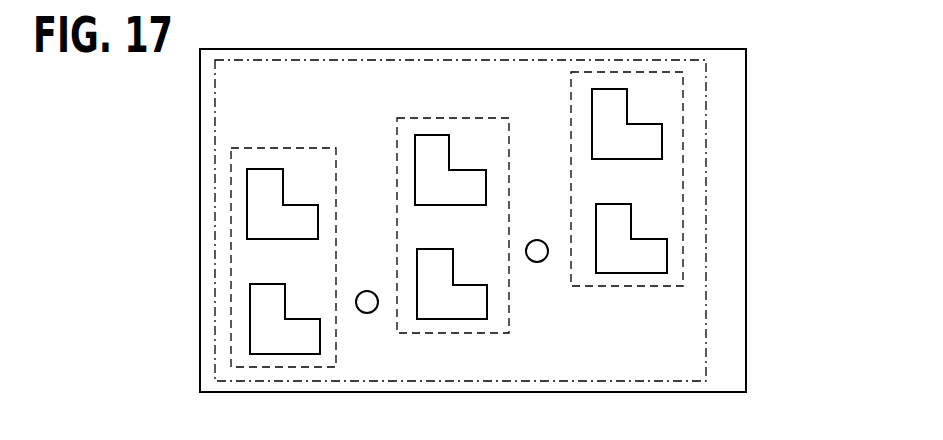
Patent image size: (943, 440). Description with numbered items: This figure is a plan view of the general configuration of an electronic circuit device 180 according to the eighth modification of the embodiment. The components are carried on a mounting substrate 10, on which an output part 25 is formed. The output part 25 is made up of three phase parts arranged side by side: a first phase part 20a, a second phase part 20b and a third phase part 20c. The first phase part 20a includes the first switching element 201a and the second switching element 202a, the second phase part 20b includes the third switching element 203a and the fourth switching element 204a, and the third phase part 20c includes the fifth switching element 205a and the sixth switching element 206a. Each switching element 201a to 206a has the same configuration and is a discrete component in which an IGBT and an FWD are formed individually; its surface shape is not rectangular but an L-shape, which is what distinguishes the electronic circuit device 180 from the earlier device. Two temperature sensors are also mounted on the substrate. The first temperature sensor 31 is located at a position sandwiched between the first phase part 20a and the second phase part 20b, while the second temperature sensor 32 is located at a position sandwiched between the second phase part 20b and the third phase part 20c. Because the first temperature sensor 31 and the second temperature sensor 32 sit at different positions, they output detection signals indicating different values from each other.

The electronic circuit device 180 is at (497, 221).
The mounting substrate 10 is at (727, 375).
The output part 25 is at (705, 305).
The first phase part 20a is at (233, 150).
The second phase part 20b is at (490, 118).
The third phase part 20c is at (657, 72).
The first switching element 201a is at (268, 354).
The second switching element 202a is at (247, 208).
The third switching element 203a is at (445, 319).
The fourth switching element 204a is at (423, 135).
The fifth switching element 205a is at (667, 258).
The sixth switching element 206a is at (662, 141).
The first temperature sensor 31 is at (367, 313).
The second temperature sensor 32 is at (537, 262).